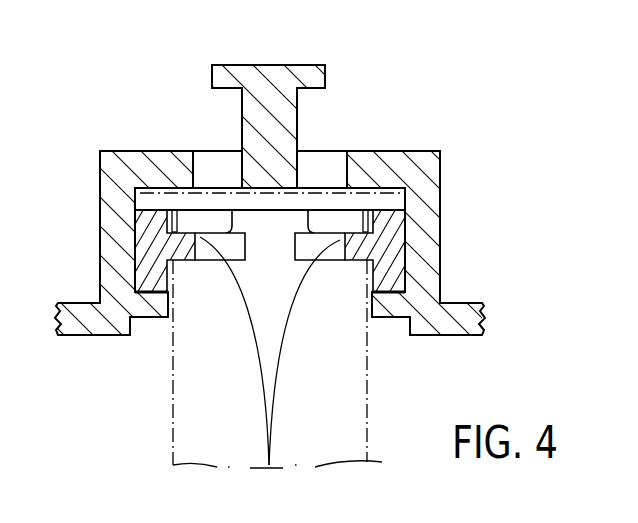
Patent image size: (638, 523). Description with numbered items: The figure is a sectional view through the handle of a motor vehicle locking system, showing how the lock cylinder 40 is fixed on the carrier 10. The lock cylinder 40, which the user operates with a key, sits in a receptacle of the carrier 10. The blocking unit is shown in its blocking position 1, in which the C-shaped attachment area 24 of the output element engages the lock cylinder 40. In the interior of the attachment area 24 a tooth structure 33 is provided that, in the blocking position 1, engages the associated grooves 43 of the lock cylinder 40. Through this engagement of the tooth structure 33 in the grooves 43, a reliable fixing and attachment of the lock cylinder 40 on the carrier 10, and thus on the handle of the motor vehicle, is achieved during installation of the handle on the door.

The blocking position 1 is at (280, 27).
The carrier 10 is at (395, 152).
The attachment area 24 is at (386, 241).
The tooth structure 33 is at (185, 238).
The lock cylinder 40 is at (333, 427).
The grooves 43 is at (269, 465).